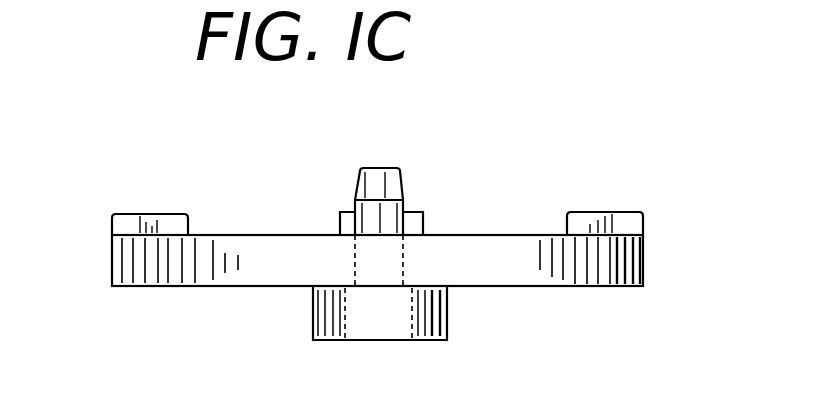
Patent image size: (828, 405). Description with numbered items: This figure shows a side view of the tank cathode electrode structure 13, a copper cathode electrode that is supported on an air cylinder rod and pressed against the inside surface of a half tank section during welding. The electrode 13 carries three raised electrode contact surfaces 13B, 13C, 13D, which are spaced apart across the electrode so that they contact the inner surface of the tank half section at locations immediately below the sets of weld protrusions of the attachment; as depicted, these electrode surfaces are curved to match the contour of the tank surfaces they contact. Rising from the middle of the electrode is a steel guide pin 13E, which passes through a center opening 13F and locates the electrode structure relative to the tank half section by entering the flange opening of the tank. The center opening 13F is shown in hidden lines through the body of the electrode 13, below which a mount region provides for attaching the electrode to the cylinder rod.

The tank cathode electrode structure 13 is at (483, 234).
The electrode contact surface 13B is at (148, 213).
The electrode contact surface 13C is at (618, 212).
The electrode contact surface 13D is at (345, 212).
The steel guide pin 13E is at (398, 176).
The center opening 13F is at (353, 257).